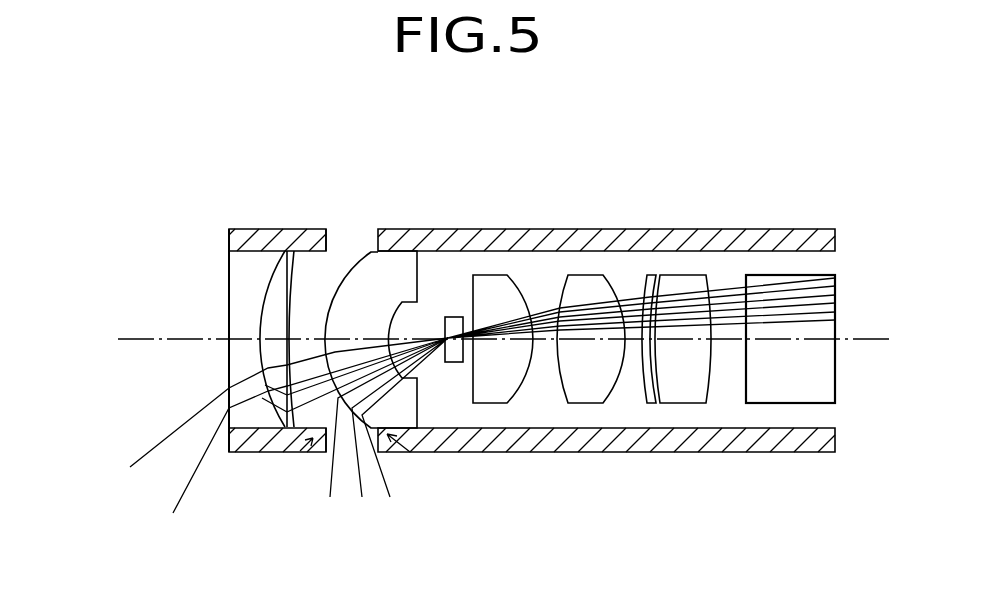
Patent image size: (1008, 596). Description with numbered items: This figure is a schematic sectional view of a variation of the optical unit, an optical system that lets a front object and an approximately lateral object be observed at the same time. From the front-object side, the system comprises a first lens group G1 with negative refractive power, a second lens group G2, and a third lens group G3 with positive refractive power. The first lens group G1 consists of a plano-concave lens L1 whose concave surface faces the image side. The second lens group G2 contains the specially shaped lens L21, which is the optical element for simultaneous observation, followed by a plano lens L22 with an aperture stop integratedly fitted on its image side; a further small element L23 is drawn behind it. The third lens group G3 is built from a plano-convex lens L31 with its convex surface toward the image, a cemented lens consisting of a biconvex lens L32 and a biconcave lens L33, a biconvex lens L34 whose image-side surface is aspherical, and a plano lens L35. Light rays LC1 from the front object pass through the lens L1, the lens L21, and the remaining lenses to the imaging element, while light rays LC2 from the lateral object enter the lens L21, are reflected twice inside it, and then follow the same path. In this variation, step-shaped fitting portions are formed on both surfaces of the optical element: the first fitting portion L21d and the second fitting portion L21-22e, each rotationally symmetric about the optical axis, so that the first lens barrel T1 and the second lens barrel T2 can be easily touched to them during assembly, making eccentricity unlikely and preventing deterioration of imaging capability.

The first lens group G1 is at (295, 173).
The second lens group G2 is at (468, 173).
The third lens group G3 is at (837, 173).
The lens L1 is at (262, 268).
The lens L21 is at (348, 234).
The plano lens L22 is at (402, 268).
The lens L23 of second group L23 is at (453, 325).
The plano-convex lens L31 is at (490, 282).
The biconvex lens L32 is at (587, 282).
The biconcave lens L33 is at (630, 282).
The biconvex lens L34 is at (690, 282).
The plano lens L35 is at (788, 282).
The first lens barrel T1 is at (278, 452).
The second lens barrel T2 is at (642, 452).
The light rays LC1 is at (190, 477).
The light rays LC2 is at (330, 478).
The first fitting portion L21d is at (298, 452).
The second fitting portion L21-22e is at (413, 452).